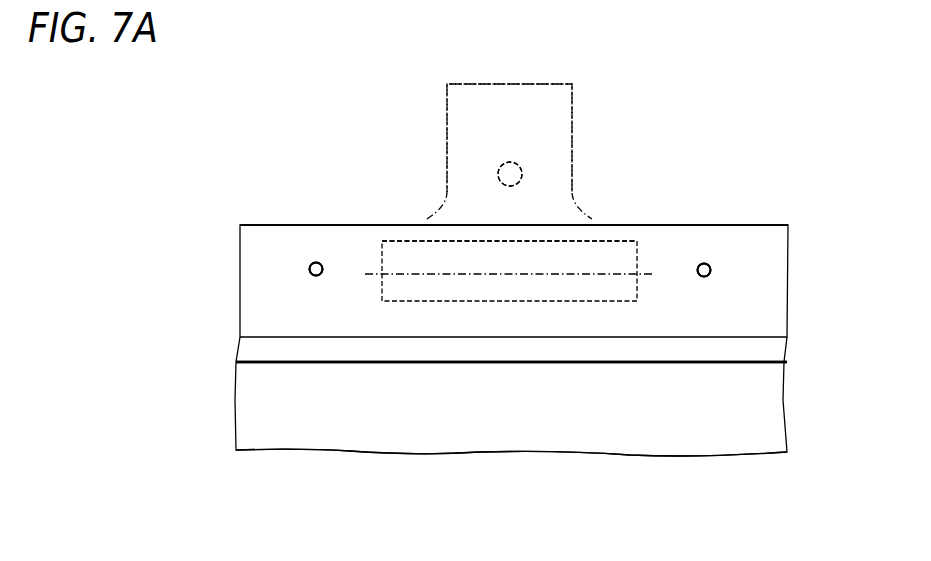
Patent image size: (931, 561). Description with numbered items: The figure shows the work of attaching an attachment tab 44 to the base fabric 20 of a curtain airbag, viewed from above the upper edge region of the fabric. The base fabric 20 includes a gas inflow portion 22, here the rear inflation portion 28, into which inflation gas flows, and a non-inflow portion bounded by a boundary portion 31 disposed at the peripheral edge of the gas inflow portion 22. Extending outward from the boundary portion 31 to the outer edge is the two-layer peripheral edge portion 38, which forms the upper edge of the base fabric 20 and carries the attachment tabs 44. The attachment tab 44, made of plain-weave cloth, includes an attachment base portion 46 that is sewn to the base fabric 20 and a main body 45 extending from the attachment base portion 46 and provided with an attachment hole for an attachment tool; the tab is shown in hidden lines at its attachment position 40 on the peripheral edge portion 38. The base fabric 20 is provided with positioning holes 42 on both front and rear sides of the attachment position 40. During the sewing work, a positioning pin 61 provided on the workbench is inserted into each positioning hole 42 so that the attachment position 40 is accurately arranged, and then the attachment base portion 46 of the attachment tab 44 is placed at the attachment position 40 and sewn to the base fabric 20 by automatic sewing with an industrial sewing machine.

The base fabric 20 is at (388, 200).
The gas inflow portion 22 is at (323, 433).
The rear inflation portion 28 is at (511, 452).
The boundary portion 31 is at (417, 350).
The peripheral edge portion 38 is at (257, 307).
The attachment position 40 is at (617, 248).
The positioning hole 42 is at (308, 267).
The attachment tab 44 is at (698, 79).
The main body 45 is at (557, 143).
The attachment base portion 46 is at (600, 258).
The positioning pin 61 is at (315, 262).